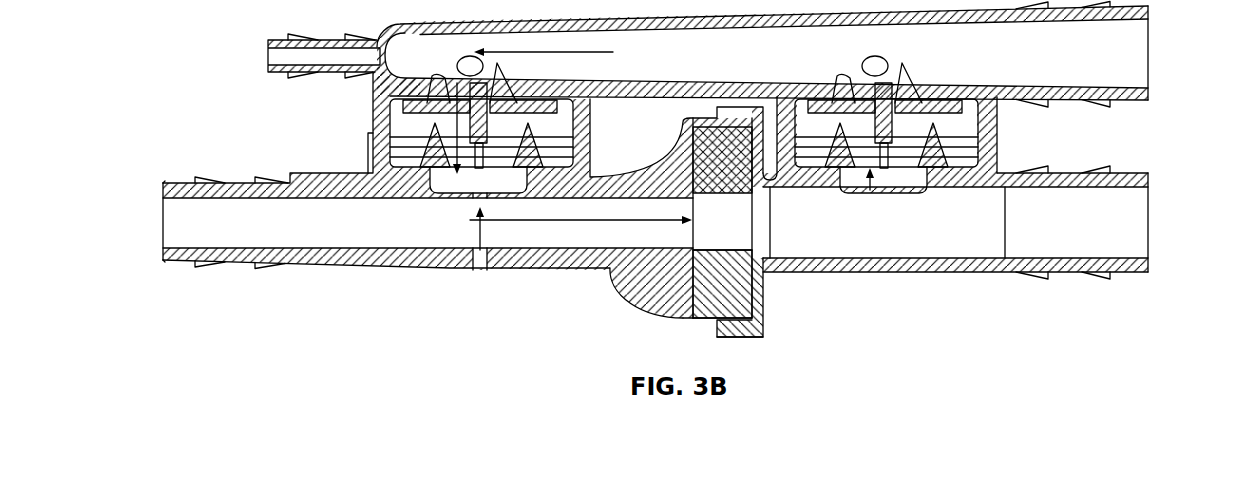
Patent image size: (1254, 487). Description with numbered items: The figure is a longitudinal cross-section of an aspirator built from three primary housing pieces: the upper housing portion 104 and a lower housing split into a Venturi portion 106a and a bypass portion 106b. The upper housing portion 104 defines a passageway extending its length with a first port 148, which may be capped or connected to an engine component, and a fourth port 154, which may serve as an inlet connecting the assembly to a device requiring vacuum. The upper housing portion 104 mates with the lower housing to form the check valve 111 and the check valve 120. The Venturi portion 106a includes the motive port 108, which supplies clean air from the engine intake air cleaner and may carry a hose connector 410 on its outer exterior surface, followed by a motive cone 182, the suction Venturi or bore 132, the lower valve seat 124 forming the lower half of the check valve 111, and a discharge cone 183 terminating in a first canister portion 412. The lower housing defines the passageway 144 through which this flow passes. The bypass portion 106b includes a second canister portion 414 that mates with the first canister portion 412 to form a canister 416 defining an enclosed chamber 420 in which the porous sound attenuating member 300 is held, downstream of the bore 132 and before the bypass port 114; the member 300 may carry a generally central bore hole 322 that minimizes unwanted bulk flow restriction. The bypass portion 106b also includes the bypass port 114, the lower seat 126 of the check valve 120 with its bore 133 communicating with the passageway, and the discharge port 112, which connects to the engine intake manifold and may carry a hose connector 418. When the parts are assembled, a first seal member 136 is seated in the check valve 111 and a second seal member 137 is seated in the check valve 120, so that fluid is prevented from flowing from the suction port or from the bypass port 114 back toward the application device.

The upper housing portion 104 is at (386, 22).
The first port 148 is at (268, 52).
The lower valve seat 124 is at (333, 166).
The check valve 111 is at (368, 128).
The hose connector 410 is at (292, 164).
The first seal member 136 is at (550, 108).
The second seal member 137 is at (958, 100).
The fourth port 154 is at (1143, 33).
The check valve 120 is at (1000, 140).
The lower valve seat 126 is at (998, 167).
The hose connector 418 is at (1123, 170).
The bore hole 322 is at (713, 190).
The enclosed chamber 420 is at (746, 274).
The bore 133 is at (866, 178).
The bypass port 114 is at (908, 183).
The discharge port 112 is at (1142, 242).
The bypass portion 106b is at (950, 268).
The canister 416 is at (772, 286).
The second canister portion 414 is at (740, 334).
The porous sound attenuating member 300 is at (687, 300).
The first canister portion 412 is at (687, 324).
The discharge cone 183 is at (610, 240).
The bore 132 is at (484, 215).
The passageway 144 is at (294, 241).
The Venturi portion 106a is at (430, 266).
The motive cone 182 is at (203, 245).
The motive port 108 is at (172, 239).